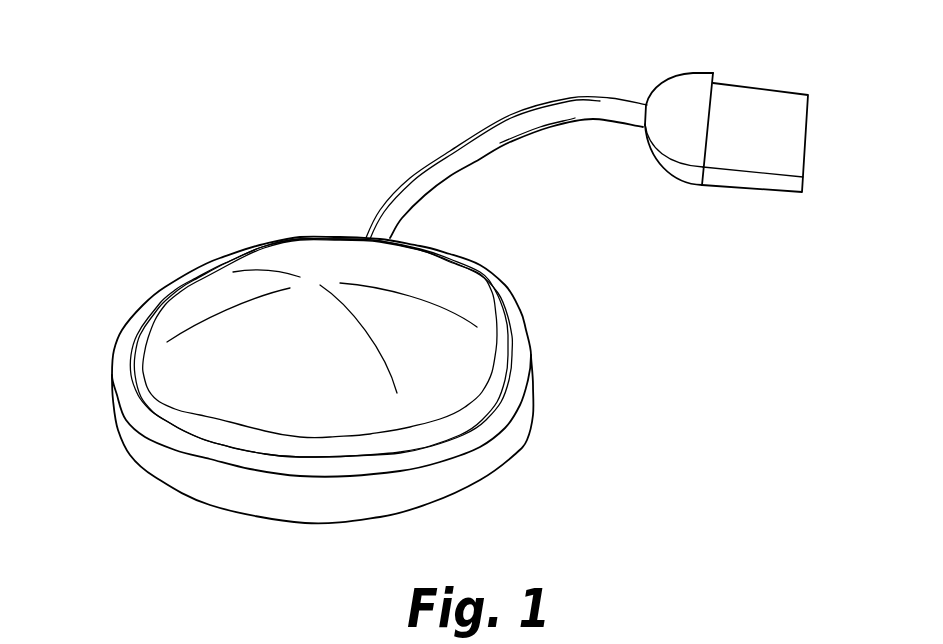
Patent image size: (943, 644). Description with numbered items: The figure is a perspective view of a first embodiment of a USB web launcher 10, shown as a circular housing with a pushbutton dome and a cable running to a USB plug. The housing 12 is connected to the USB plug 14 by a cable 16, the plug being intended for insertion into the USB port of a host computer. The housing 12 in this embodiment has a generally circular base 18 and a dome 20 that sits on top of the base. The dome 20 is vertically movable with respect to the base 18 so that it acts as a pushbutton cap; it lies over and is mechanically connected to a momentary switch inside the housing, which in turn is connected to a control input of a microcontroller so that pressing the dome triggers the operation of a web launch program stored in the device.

The USB web launcher 10 is at (148, 163).
The housing 12 is at (528, 313).
The USB plug 14 is at (747, 187).
The cable 16 is at (482, 160).
The base 18 is at (497, 463).
The dome 20 is at (427, 345).